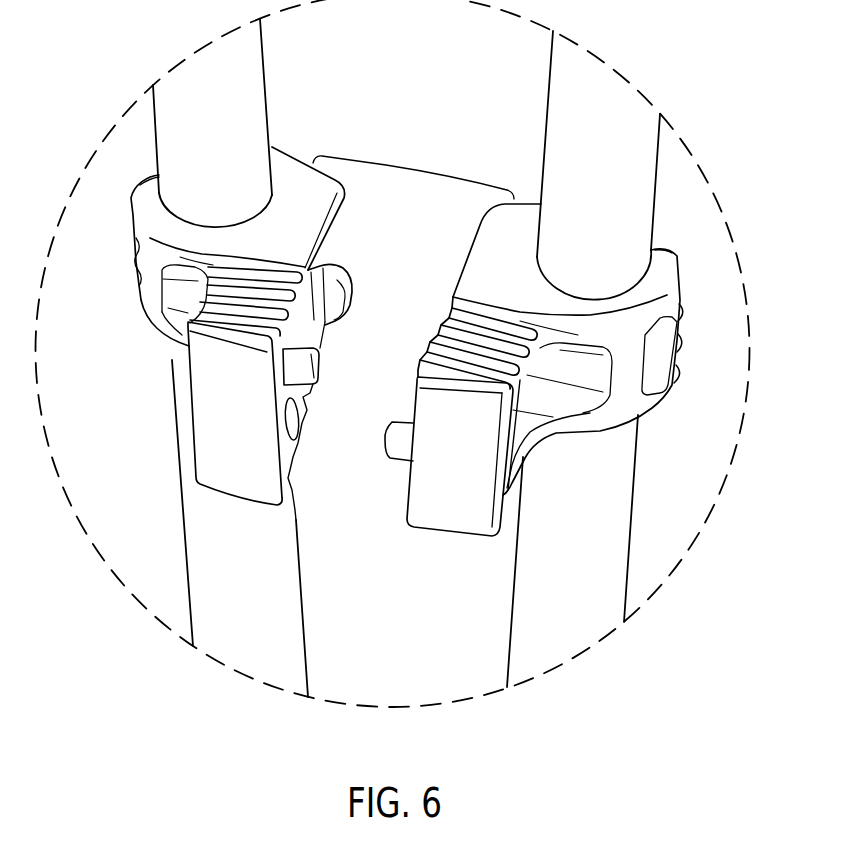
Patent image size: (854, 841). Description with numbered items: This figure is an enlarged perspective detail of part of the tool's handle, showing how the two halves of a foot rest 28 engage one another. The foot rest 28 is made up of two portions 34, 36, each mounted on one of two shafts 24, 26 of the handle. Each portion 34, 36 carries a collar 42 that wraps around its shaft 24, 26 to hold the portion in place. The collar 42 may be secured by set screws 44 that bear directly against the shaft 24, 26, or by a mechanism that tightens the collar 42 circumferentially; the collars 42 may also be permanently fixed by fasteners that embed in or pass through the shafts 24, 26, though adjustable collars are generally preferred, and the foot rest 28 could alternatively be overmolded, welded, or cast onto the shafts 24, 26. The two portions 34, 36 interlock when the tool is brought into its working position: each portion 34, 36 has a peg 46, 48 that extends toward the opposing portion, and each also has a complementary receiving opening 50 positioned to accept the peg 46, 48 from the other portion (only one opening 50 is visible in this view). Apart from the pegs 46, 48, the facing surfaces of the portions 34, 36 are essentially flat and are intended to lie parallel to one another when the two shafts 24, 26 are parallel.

The shaft 24 is at (250, 67).
The shaft 26 is at (560, 125).
The foot rest 28 is at (428, 177).
The portion 34 is at (150, 312).
The portion 36 is at (640, 405).
The collar 42 is at (148, 173).
The set screws 44 is at (679, 368).
The peg 46 is at (317, 370).
The peg 48 is at (393, 443).
The receiving opening 50 is at (297, 418).